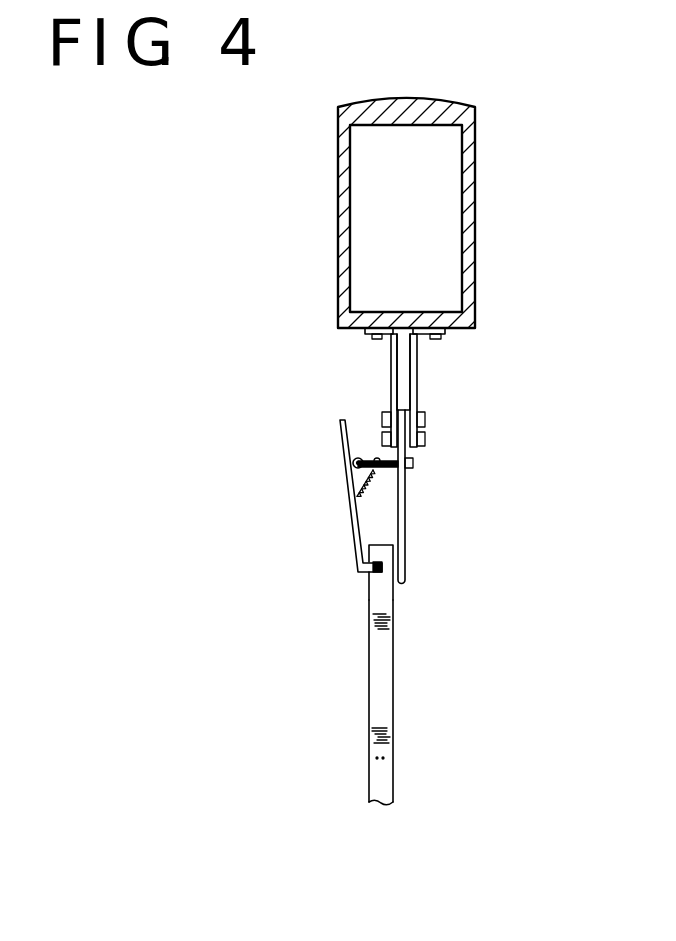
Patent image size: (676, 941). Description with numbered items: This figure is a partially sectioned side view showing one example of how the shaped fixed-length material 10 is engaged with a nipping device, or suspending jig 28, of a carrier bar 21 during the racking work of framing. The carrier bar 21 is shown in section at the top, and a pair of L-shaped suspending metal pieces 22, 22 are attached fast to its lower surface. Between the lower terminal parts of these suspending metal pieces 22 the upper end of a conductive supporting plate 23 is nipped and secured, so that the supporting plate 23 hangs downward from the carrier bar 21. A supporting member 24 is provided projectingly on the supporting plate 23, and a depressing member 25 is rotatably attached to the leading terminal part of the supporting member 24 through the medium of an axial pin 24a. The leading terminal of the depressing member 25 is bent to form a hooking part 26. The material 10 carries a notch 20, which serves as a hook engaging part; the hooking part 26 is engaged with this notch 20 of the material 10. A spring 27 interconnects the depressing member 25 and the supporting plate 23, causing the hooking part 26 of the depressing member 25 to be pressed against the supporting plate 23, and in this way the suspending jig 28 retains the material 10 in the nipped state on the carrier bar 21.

The fixed-length material 10 is at (375, 700).
The notch 20 is at (380, 572).
The carrier bar 21 is at (470, 228).
The L-shaped suspending metal pieces 22 is at (391, 370).
The conductive supporting plate 23 is at (407, 552).
The supporting member 24 is at (358, 458).
The axial pin 24a is at (343, 463).
The depressing member 25 is at (346, 486).
The hooking part 26 is at (362, 574).
The spring 27 is at (367, 499).
The nipping device (suspending jig) 28 is at (312, 461).